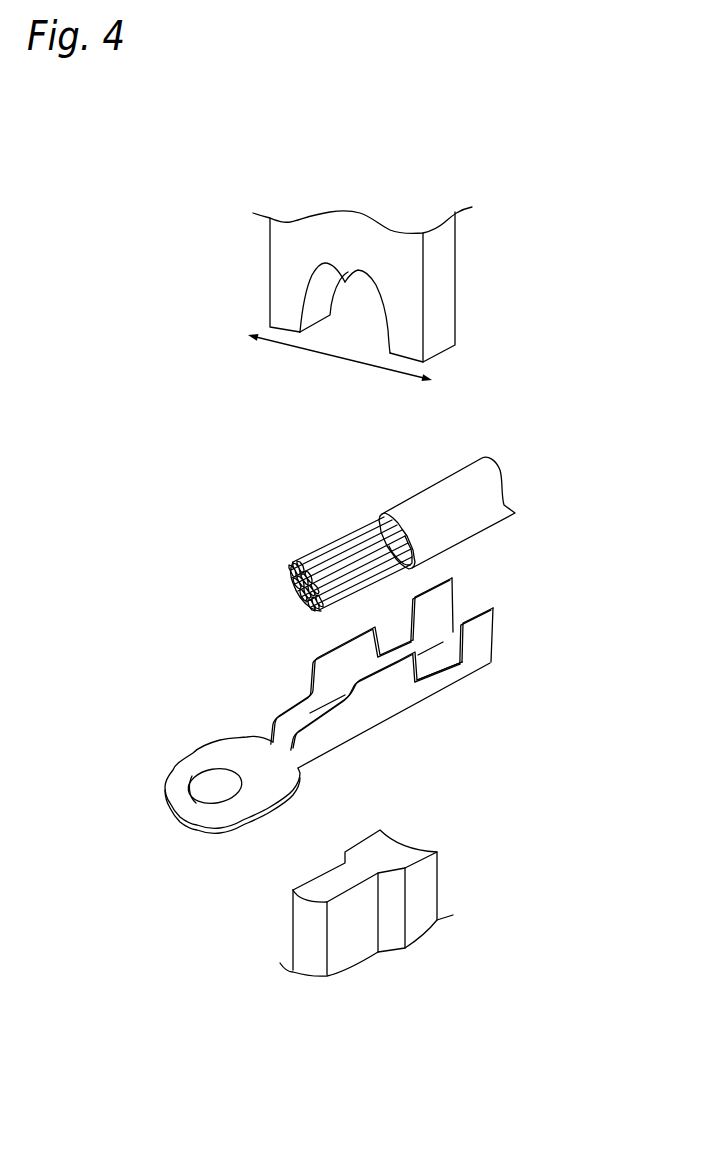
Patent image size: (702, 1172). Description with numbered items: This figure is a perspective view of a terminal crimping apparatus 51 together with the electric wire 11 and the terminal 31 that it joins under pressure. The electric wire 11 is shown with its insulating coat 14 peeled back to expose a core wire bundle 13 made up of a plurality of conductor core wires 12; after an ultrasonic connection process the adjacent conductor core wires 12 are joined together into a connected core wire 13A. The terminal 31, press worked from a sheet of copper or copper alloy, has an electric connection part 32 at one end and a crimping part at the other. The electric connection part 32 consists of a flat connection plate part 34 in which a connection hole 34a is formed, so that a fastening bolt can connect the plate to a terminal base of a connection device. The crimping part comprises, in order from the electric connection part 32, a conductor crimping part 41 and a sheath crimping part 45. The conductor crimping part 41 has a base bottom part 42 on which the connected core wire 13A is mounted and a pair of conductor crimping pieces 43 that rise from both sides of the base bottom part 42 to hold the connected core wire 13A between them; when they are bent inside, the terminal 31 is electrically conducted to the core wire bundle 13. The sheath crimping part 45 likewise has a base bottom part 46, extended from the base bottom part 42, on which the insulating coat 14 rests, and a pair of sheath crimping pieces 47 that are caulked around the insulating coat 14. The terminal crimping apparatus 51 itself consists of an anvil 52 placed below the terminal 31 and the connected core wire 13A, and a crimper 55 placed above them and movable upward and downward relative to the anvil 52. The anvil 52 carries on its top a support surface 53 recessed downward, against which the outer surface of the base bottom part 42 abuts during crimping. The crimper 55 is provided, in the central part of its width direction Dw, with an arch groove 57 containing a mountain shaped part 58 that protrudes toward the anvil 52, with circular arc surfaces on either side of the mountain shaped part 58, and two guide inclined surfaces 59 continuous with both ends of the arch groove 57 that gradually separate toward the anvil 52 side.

The electric wire 11 is at (516, 477).
The conductor core wires 12 is at (348, 537).
The core wire bundle 13 is at (292, 575).
The connected core wire 13A is at (308, 553).
The insulating coat 14 is at (437, 498).
The terminal 31 is at (330, 766).
The electric connection part 32 is at (210, 828).
The connection plate part 34 is at (232, 750).
The connection hole 34a is at (193, 790).
The conductor crimping part 41 is at (380, 712).
The base bottom part 42 is at (320, 713).
The conductor crimping pieces 43 is at (370, 678).
The sheath crimping part 45 is at (490, 664).
The base bottom part 46 is at (431, 664).
The sheath crimping pieces 47 is at (494, 612).
The terminal crimping apparatus 51 is at (122, 248).
The anvil 52 is at (443, 881).
The support surface 53 is at (355, 877).
The crimper 55 is at (456, 245).
The arch groove 57 is at (373, 288).
The mountain shaped part 58 is at (307, 282).
The guide inclined surfaces 59 is at (317, 303).
The width direction Dw is at (340, 367).